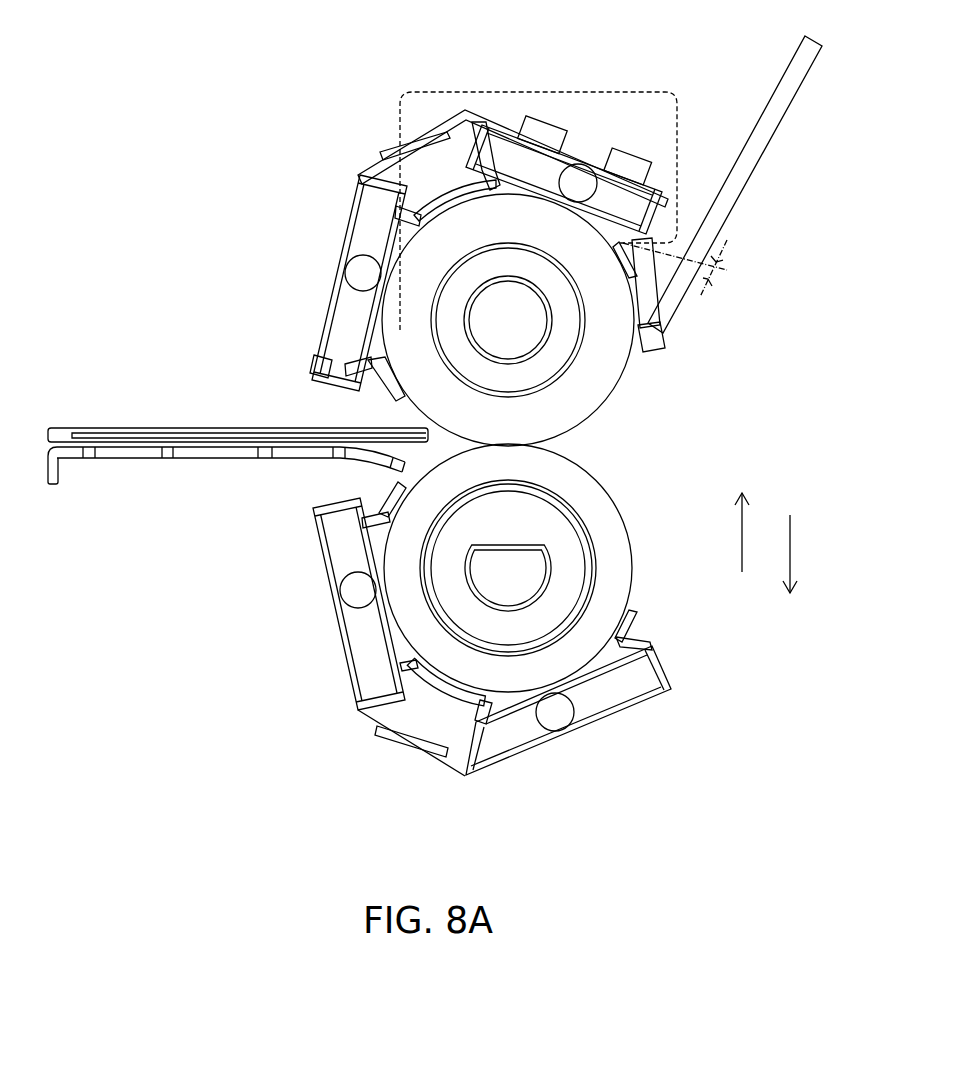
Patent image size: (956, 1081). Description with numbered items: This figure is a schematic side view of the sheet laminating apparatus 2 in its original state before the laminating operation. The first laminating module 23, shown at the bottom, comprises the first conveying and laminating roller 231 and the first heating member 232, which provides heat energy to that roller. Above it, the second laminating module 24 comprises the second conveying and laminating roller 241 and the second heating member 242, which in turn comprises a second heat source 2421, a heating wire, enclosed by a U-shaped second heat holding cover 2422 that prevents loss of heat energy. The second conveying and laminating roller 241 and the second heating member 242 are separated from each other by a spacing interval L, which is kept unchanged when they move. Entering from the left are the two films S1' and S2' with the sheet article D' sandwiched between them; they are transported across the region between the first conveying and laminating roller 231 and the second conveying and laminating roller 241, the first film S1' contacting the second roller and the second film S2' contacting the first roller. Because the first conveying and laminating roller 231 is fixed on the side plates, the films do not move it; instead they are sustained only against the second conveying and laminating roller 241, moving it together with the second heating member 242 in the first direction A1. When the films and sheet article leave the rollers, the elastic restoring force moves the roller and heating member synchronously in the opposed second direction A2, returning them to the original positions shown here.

The sheet laminating apparatus 2 is at (133, 30).
The first laminating module 23 is at (515, 625).
The first conveying and laminating roller 231 is at (580, 652).
The first heating member 232 is at (510, 738).
The second laminating module 24 is at (498, 247).
The second conveying and laminating roller 241 is at (582, 407).
The second heating member 242 is at (472, 215).
The second heat source 2421 is at (370, 215).
The second heat holding cover 2422 is at (325, 327).
The spacing interval L is at (681, 268).
The sheet article D' is at (249, 410).
The first film S1' is at (238, 412).
The second film S2' is at (226, 467).
The first direction A1 is at (742, 547).
The second direction A2 is at (789, 541).